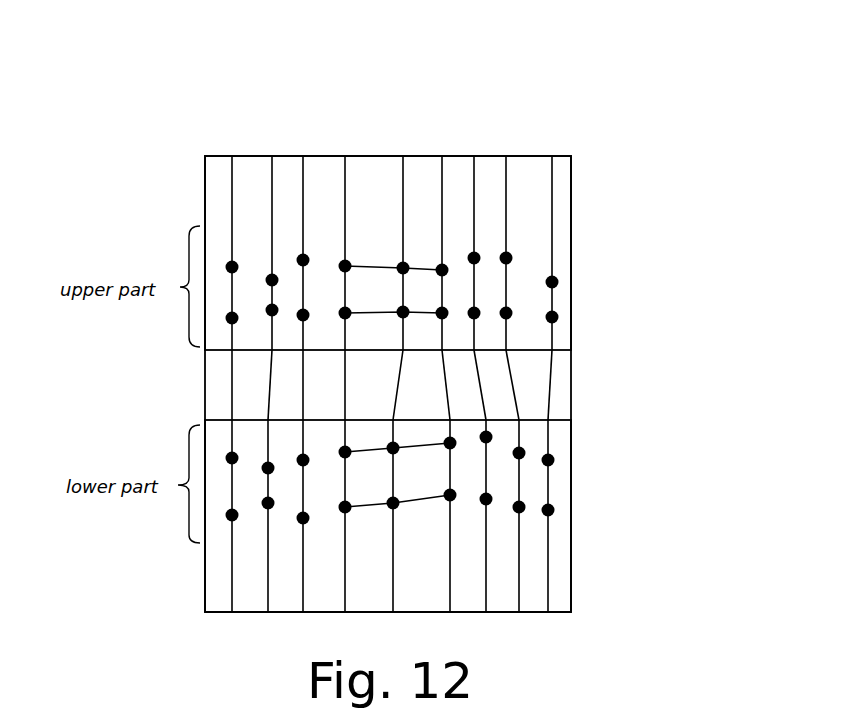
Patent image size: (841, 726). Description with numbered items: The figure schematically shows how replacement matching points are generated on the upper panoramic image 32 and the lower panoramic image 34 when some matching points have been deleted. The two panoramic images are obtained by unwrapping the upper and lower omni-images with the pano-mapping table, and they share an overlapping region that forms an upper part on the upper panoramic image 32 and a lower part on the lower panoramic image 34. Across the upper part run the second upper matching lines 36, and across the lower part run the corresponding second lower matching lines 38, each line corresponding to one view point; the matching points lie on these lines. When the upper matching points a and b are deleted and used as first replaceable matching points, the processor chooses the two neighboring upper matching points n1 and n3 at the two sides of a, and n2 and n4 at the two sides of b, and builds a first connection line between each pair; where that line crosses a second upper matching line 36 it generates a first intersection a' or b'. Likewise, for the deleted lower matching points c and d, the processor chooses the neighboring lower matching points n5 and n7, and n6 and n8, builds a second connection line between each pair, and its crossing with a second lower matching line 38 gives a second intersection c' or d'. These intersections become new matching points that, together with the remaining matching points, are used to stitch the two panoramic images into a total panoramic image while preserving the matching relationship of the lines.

The upper panoramic image 32 is at (500, 127).
The lower panoramic image 34 is at (580, 613).
The second upper matching lines 36 is at (438, 262).
The second lower matching lines 38 is at (438, 516).
The neighboring upper matching point n1 is at (334, 254).
The neighboring upper matching point n2 is at (334, 303).
The neighboring upper matching point n3 is at (463, 251).
The neighboring upper matching point n4 is at (463, 323).
The neighboring lower matching point n5 is at (332, 442).
The neighboring lower matching point n6 is at (332, 497).
The neighboring lower matching point n7 is at (474, 449).
The neighboring lower matching point n8 is at (474, 483).